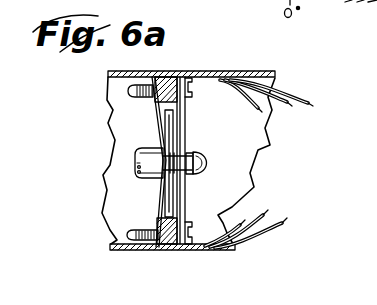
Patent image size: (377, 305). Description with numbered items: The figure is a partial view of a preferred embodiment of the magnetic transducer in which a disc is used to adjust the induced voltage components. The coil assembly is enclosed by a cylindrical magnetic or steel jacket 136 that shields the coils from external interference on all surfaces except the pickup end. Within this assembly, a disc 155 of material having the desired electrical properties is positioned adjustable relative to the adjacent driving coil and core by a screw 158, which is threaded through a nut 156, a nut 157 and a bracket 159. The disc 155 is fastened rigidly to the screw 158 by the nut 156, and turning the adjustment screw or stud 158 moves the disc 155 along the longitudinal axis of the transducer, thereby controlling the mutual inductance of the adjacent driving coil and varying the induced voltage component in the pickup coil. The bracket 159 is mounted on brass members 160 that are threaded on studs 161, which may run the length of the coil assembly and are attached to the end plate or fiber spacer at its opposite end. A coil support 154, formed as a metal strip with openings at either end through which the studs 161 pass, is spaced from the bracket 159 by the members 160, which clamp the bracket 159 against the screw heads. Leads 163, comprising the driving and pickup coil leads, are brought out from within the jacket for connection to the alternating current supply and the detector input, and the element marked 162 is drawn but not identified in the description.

The magnetic jacket 136 is at (268, 72).
The coil support 154 is at (166, 213).
The disc 155 is at (166, 131).
The nut 156 is at (180, 177).
The nut 157 is at (186, 140).
The screw 158 is at (207, 161).
The bracket 159 is at (185, 120).
The brass members 160 is at (168, 73).
The studs 161 is at (128, 89).
The bottom mounting plate 162 is at (191, 248).
The leads 163 is at (288, 84).